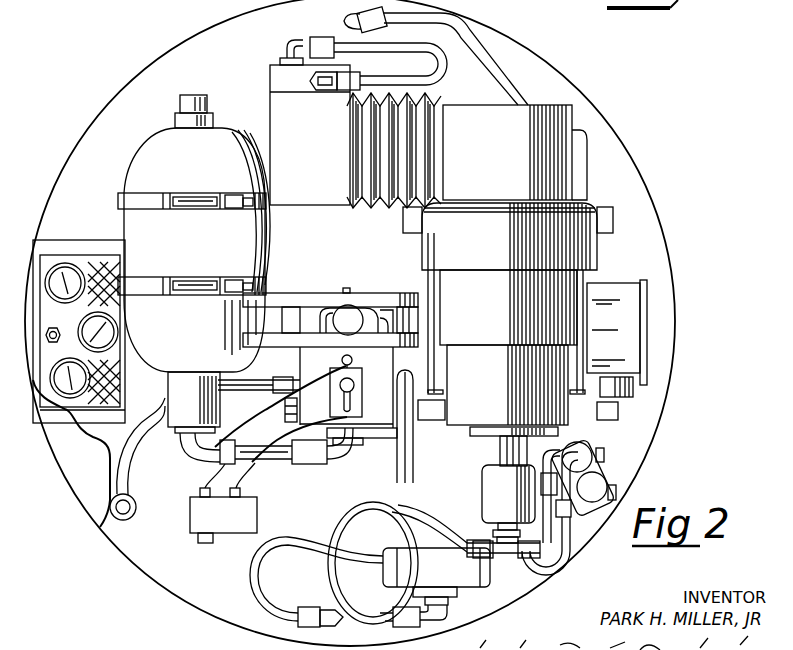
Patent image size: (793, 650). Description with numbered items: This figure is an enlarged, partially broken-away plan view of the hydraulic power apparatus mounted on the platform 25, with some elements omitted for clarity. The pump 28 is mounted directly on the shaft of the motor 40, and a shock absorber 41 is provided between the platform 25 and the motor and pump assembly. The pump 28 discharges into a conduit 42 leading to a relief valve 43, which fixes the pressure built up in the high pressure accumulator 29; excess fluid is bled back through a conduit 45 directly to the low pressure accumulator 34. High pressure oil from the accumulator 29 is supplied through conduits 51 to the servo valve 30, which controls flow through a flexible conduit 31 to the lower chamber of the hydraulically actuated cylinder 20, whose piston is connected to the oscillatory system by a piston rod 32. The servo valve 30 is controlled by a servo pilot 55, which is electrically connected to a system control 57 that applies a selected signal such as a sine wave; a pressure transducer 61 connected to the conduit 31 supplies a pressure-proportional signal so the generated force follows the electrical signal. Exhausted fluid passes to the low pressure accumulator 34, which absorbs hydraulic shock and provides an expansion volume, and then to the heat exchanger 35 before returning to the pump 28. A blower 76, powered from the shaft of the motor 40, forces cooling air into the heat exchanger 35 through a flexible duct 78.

The platform 25 is at (95, 95).
The high pressure accumulator 29 is at (148, 160).
The heat exchanger 35 is at (280, 106).
The flexible duct 78 is at (423, 101).
The blower 76 is at (492, 163).
The motor 40 is at (497, 303).
The shock absorber 41 is at (600, 212).
The piston rod 32 is at (345, 310).
The hydraulically actuated cylinder 20 is at (365, 306).
The flexible conduit 31 is at (390, 310).
The servo valve 30 is at (373, 429).
The pressure transducer 61 is at (340, 358).
The servo pilot 55 is at (352, 383).
The conduits 51 is at (408, 462).
The low pressure accumulator 34 is at (80, 475).
The system control 57 is at (234, 527).
The conduit 42 is at (328, 533).
The conduit 45 is at (250, 580).
The relief valve 43 is at (448, 579).
The pump 28 is at (482, 468).